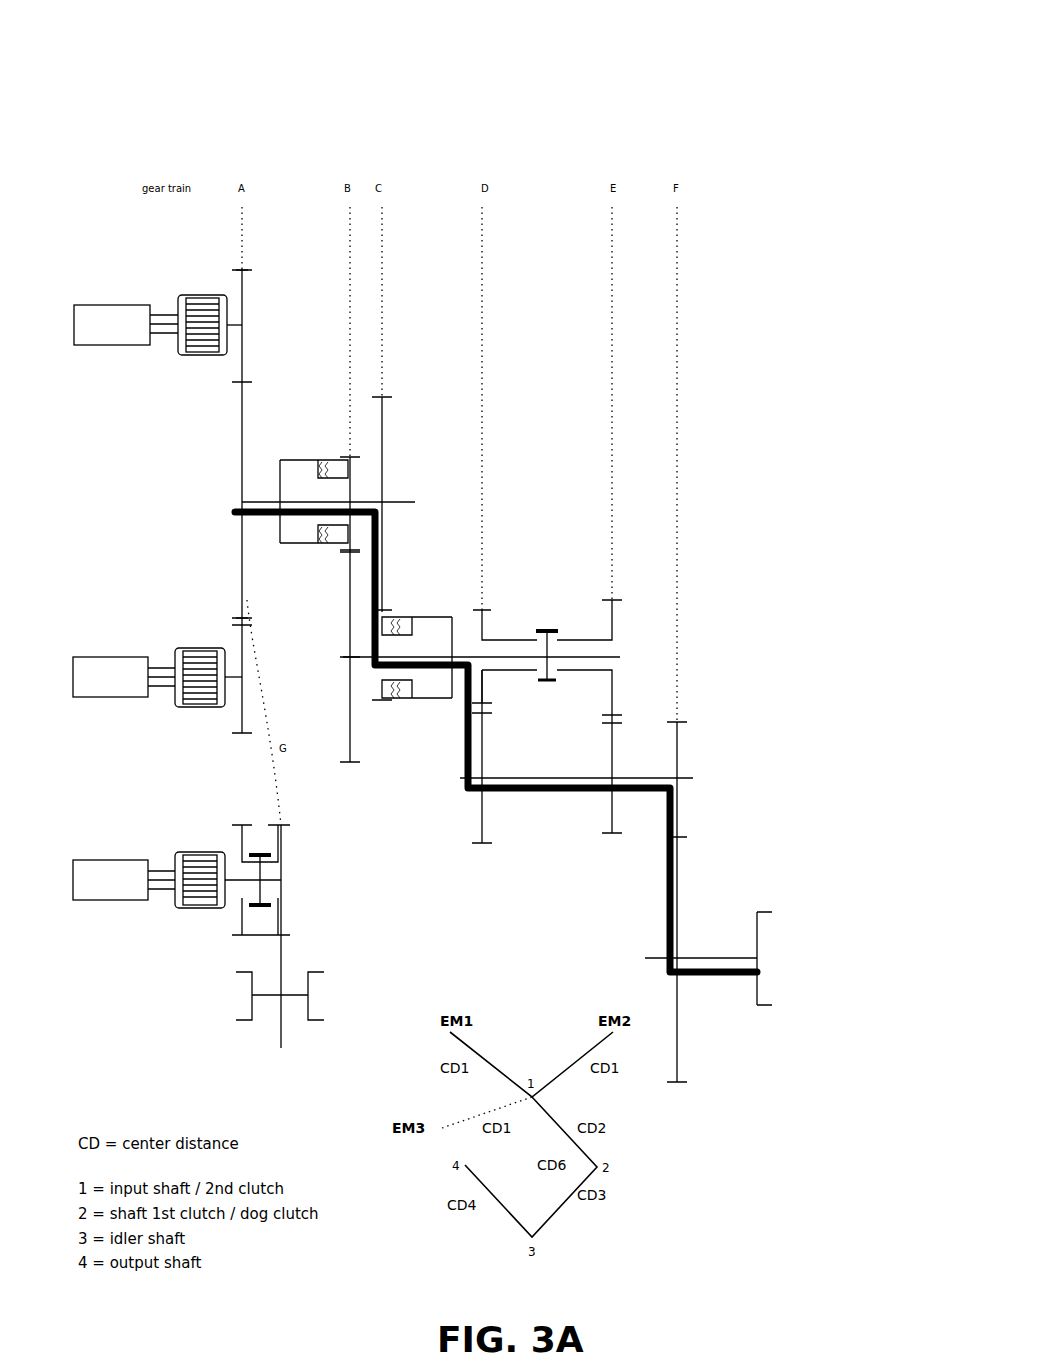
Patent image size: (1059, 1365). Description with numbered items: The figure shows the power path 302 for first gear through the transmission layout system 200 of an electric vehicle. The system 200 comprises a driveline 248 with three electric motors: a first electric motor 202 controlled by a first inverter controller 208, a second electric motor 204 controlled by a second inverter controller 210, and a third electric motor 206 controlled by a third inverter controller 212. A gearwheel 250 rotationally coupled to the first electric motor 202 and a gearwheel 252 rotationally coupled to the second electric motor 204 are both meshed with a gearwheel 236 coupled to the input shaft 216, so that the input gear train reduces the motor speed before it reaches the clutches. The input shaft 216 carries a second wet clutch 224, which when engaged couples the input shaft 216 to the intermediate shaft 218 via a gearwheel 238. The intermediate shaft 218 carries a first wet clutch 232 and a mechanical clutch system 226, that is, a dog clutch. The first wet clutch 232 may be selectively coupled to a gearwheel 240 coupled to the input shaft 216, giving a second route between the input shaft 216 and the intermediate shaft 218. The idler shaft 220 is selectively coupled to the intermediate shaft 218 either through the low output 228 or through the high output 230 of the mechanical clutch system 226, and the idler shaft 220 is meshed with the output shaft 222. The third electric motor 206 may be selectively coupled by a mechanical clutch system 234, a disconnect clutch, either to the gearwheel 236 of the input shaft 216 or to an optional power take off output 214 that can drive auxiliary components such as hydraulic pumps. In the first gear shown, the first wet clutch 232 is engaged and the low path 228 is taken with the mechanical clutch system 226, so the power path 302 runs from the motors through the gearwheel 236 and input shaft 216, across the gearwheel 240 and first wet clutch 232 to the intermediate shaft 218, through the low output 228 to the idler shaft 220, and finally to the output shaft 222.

The transmission layout system 200 is at (796, 34).
The first electric motor 202 is at (203, 295).
The second electric motor 204 is at (205, 648).
The third electric motor 206 is at (197, 852).
The first inverter controller 208 is at (118, 305).
The second inverter controller 210 is at (105, 657).
The third inverter controller 212 is at (113, 860).
The power take off (PTO) output 214 is at (326, 1000).
The input shaft 216 is at (263, 502).
The intermediate shaft 218 is at (620, 655).
The idler shaft 220 is at (638, 778).
The output shaft 222 is at (713, 958).
The second wet clutch 224 is at (340, 444).
The mechanical clutch system 226 is at (551, 590).
The low output 228 is at (503, 615).
The high output 230 is at (586, 615).
The first wet clutch 232 is at (404, 594).
The mechanical clutch system 234 is at (280, 871).
The gearwheel 236 is at (241, 568).
The gearwheel 238 is at (350, 735).
The gearwheel 240 is at (383, 455).
The driveline 248 is at (654, 308).
The gearwheel 250 is at (244, 305).
The gearwheel 252 is at (243, 655).
The power path 302 is at (668, 918).